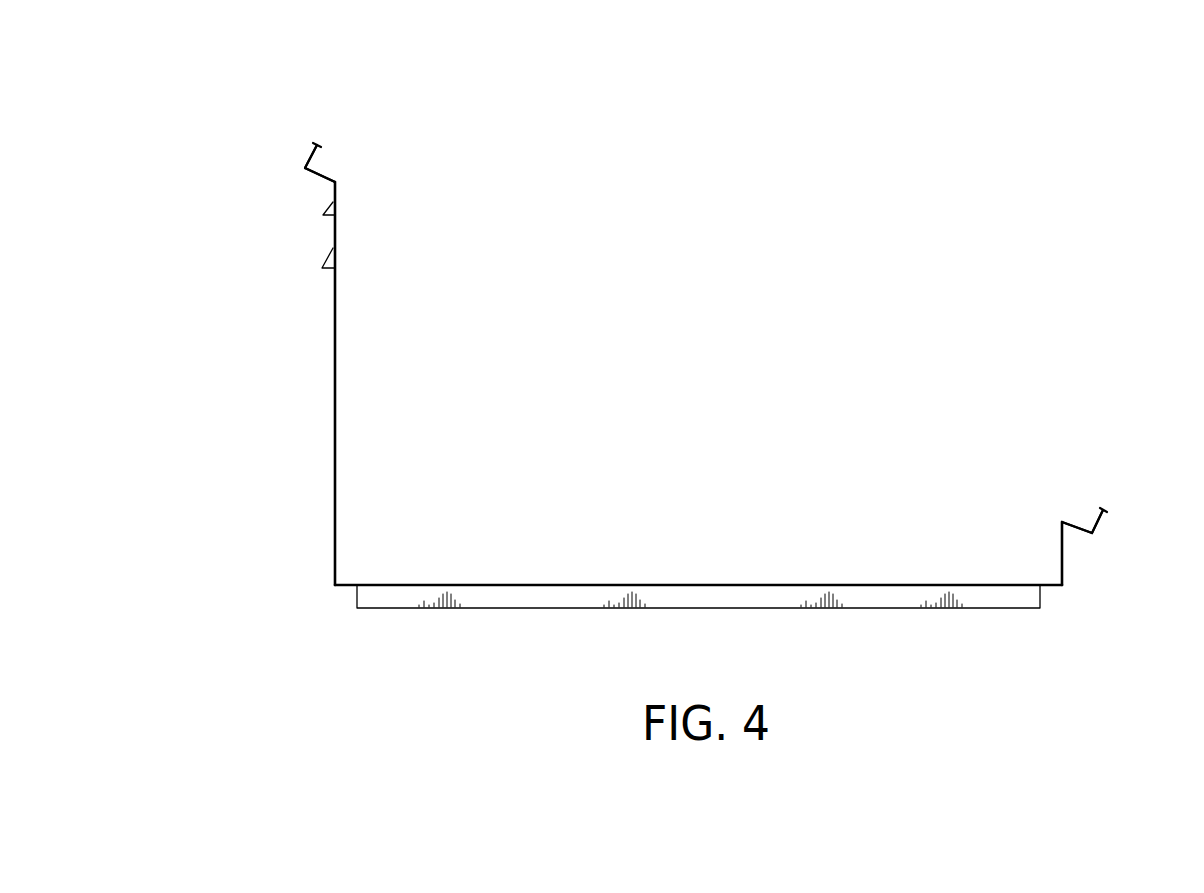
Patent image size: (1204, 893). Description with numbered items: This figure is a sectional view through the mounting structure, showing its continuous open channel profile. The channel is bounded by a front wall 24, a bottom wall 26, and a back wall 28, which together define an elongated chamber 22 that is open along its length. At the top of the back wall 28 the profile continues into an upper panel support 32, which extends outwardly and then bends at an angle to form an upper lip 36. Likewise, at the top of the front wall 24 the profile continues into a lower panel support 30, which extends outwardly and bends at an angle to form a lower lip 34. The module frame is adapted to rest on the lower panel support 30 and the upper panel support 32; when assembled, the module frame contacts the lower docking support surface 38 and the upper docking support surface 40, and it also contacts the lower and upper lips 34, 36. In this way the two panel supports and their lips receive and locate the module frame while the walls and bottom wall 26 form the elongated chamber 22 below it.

The elongated chamber 22 is at (713, 505).
The front wall 24 is at (1063, 575).
The bottom wall 26 is at (533, 588).
The back wall 28 is at (335, 503).
The lower panel support 30 is at (1076, 533).
The upper panel support 32 is at (307, 186).
The lower lip 34 is at (1087, 515).
The upper lip 36 is at (323, 158).
The lower docking support surface 38 is at (1076, 523).
The upper docking support surface 40 is at (327, 178).